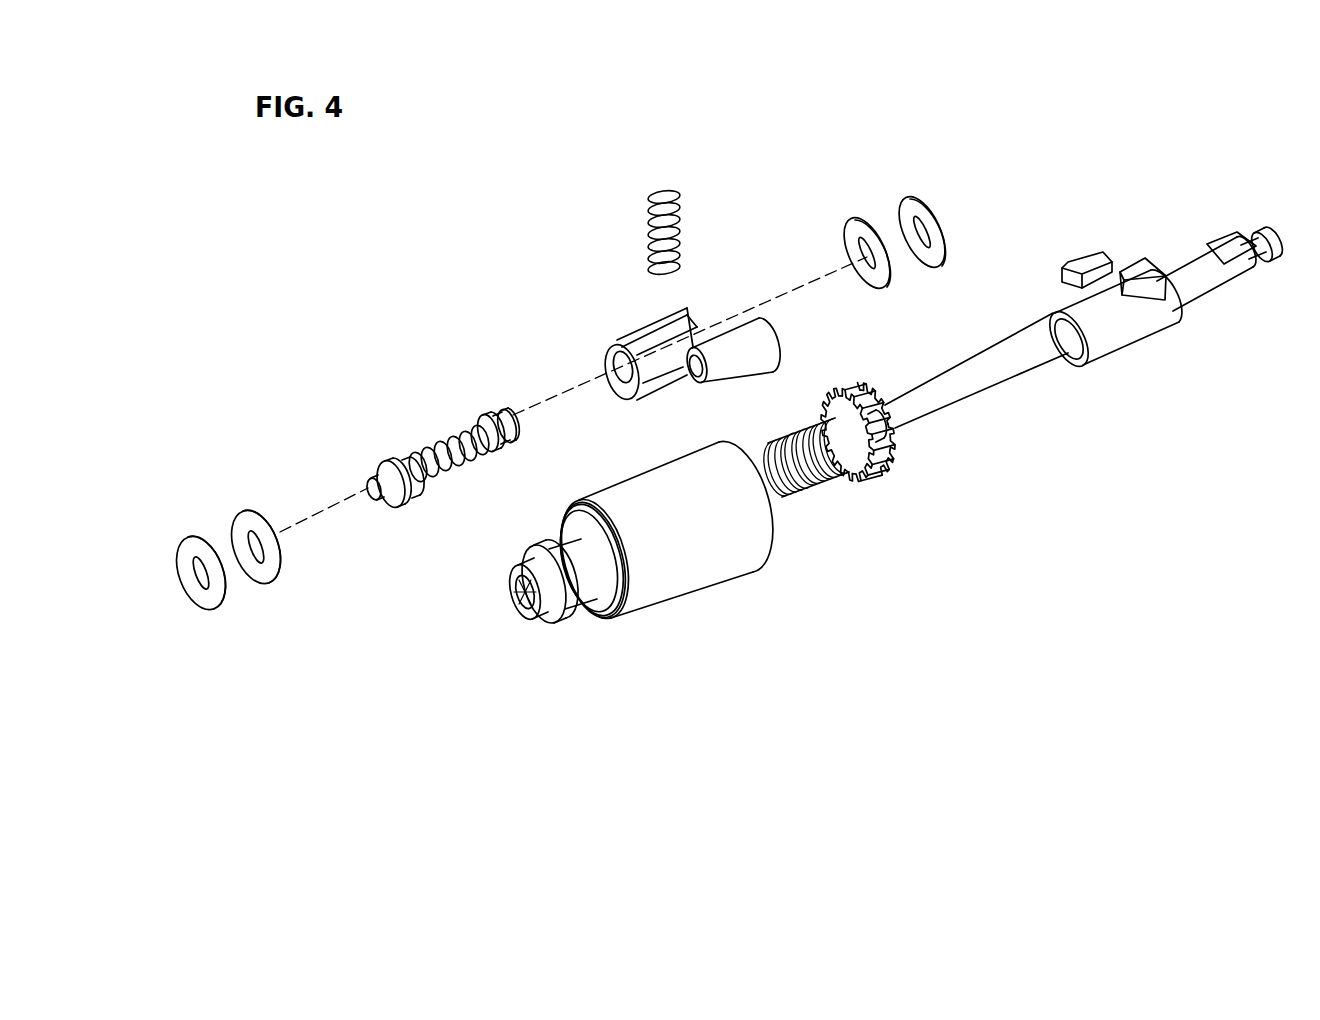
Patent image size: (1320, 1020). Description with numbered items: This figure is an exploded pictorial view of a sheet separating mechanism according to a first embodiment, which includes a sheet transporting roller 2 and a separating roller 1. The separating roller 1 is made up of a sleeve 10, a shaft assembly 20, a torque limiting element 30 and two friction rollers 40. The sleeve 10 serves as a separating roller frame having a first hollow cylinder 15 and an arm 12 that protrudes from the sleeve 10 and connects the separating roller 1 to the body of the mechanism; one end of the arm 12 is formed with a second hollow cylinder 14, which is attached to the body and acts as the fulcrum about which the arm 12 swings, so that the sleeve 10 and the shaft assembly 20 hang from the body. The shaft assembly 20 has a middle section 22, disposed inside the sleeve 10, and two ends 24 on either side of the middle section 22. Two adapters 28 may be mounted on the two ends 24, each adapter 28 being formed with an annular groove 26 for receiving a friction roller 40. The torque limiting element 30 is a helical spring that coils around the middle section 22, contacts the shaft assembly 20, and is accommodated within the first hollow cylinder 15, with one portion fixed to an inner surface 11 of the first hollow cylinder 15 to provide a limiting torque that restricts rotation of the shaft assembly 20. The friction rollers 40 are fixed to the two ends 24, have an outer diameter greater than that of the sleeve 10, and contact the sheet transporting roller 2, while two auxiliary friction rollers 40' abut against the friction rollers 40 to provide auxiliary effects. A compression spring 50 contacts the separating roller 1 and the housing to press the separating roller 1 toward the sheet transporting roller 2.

The separating roller 1 is at (375, 158).
The sheet transporting roller 2 is at (700, 567).
The sleeve 10 is at (659, 319).
The inner surface 11 is at (614, 368).
The arm 12 is at (672, 378).
The second hollow cylinder 14 is at (703, 382).
The first hollow cylinder 15 is at (690, 310).
The shaft assembly 20 is at (411, 473).
The middle section 22 is at (437, 450).
The ends 24 is at (375, 497).
The annular groove 26 is at (398, 503).
The adapter 28 is at (370, 468).
The torque limiting element 30 is at (410, 462).
The friction roller 40 is at (560, 369).
The auxiliary friction roller 40' is at (560, 367).
The compression spring 50 is at (650, 220).